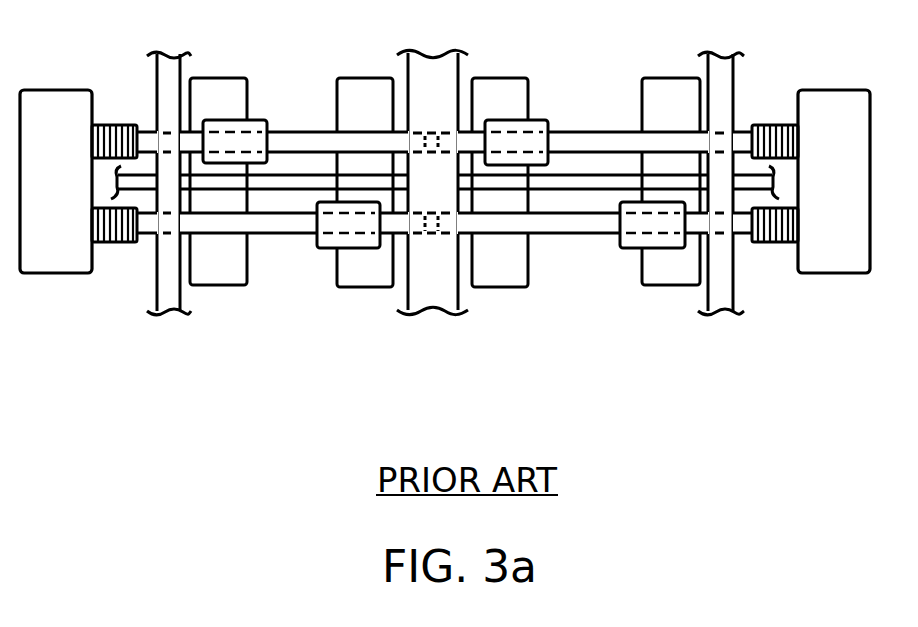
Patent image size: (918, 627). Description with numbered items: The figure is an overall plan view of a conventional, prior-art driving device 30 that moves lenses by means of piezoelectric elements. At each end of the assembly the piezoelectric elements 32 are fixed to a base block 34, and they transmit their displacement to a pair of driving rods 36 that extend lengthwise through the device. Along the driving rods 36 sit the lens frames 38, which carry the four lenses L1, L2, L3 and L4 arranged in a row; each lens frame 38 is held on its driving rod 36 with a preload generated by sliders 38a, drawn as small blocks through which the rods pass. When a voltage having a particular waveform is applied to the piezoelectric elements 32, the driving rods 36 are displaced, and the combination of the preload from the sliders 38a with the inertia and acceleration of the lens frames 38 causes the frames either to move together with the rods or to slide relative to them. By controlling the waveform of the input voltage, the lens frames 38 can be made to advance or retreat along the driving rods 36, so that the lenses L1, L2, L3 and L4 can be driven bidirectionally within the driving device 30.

The driving device 30 is at (423, 320).
The piezoelectric elements 32 is at (771, 125).
The base block 34 is at (833, 274).
The driving rods 36 is at (582, 132).
The lens frames 38 is at (445, 199).
The sliders 38a is at (540, 120).
The lens L1 is at (251, 276).
The lens L2 is at (331, 105).
The lens L3 is at (533, 272).
The lens L4 is at (631, 87).